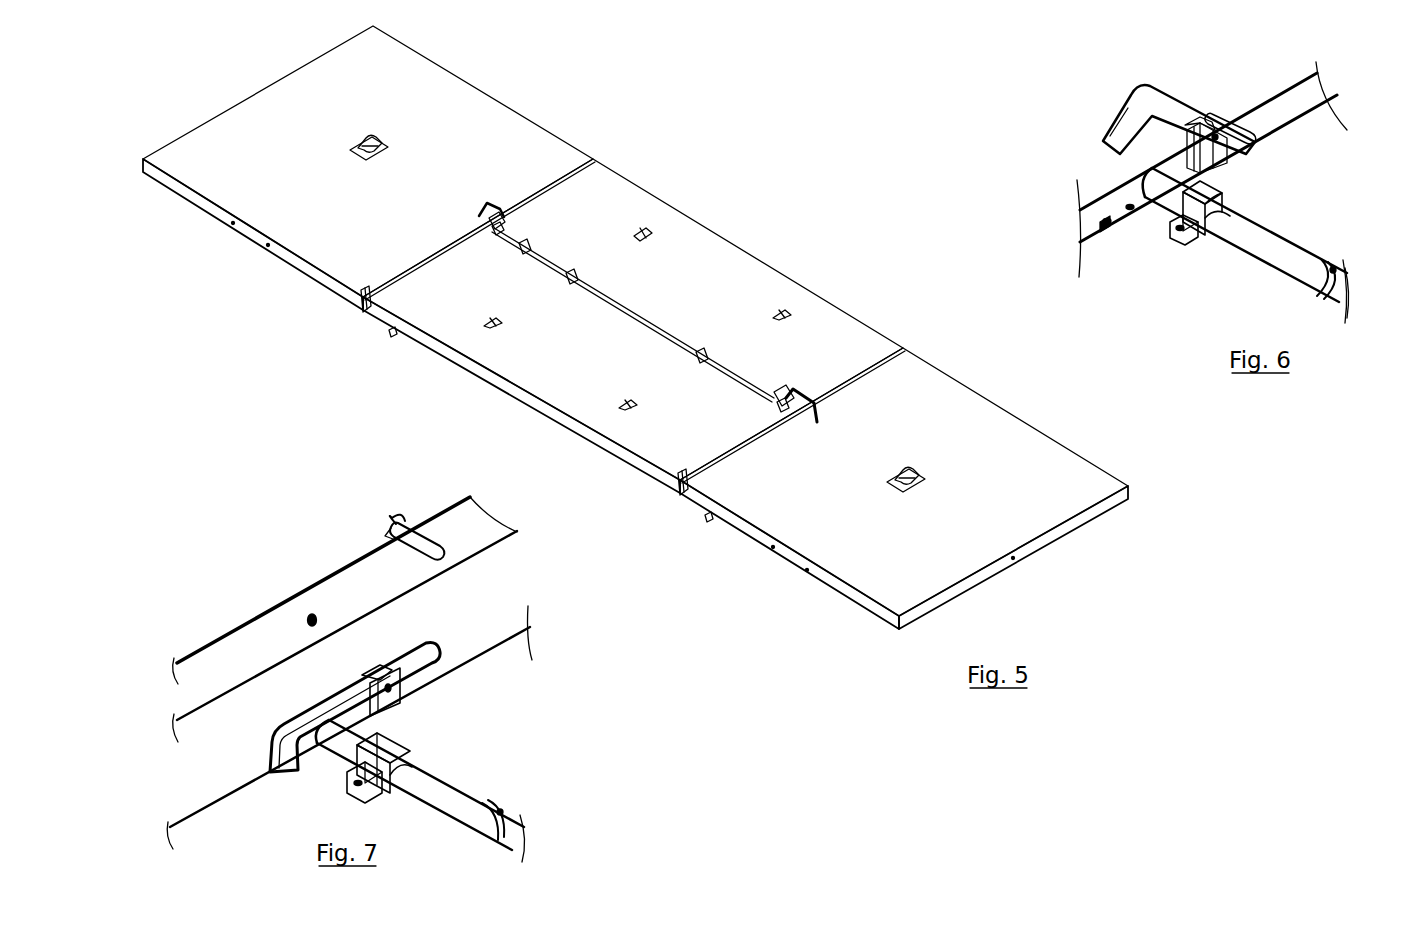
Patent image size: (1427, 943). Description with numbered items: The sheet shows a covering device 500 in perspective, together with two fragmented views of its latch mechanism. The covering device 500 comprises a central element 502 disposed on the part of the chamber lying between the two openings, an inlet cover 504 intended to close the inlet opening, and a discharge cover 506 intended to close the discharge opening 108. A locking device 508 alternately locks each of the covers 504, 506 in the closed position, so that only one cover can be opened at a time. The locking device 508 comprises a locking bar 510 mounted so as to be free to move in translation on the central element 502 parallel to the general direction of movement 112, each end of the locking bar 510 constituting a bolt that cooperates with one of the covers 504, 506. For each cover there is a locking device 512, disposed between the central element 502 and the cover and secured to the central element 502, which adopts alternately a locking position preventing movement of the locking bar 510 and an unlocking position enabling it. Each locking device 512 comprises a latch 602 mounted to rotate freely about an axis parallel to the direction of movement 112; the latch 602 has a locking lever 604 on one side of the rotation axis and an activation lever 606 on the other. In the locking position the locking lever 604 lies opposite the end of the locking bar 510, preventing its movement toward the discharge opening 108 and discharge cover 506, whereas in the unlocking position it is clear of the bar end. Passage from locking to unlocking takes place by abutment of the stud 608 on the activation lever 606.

In FIG. 5, the covering device 500 is at (705, 108).
In FIG. 5, the discharge cover 506 is at (251, 182).
In FIG. 6, the discharge cover 506 is at (1178, 95).
In FIG. 7, the discharge cover 506 is at (233, 560).
In FIG. 5, the central element 502 is at (653, 439).
In FIG. 6, the central element 502 is at (1194, 279).
In FIG. 7, the central element 502 is at (461, 772).
In FIG. 5, the inlet cover 504 is at (881, 577).
In FIG. 5, the locking device 508 is at (640, 296).
In FIG. 5, the locking bar 510 is at (637, 321).
In FIG. 6, the locking bar 510 is at (1300, 256).
In FIG. 7, the locking bar 510 is at (490, 810).
In FIG. 5, the locking device 512 is at (487, 202).
In FIG. 6, the locking device 512 is at (1252, 92).
In FIG. 7, the locking device 512 is at (452, 627).
In FIG. 5, the general direction of movement 112 is at (463, 398).
In FIG. 6, the discharge opening 108 is at (984, 212).
In FIG. 7, the discharge opening 108 is at (186, 752).
In FIG. 6, the latch 602 is at (1120, 128).
In FIG. 7, the latch 602 is at (290, 762).
In FIG. 6, the locking lever 604 is at (1162, 107).
In FIG. 7, the locking lever 604 is at (320, 708).
In FIG. 6, the activation lever 606 is at (1233, 143).
In FIG. 7, the activation lever 606 is at (423, 665).
In FIG. 6, the stud 608 is at (1250, 122).
In FIG. 7, the stud 608 is at (420, 522).